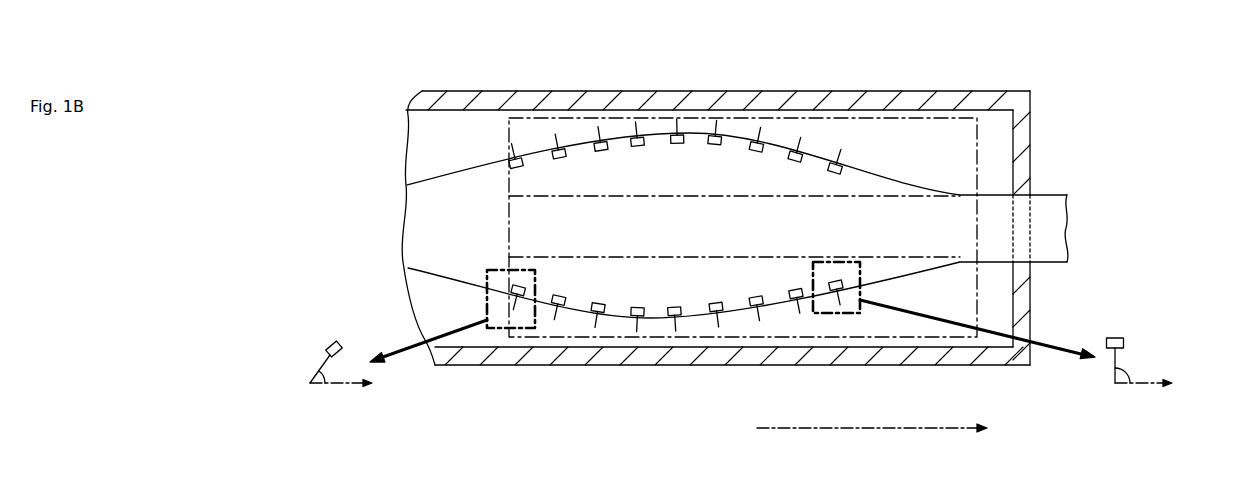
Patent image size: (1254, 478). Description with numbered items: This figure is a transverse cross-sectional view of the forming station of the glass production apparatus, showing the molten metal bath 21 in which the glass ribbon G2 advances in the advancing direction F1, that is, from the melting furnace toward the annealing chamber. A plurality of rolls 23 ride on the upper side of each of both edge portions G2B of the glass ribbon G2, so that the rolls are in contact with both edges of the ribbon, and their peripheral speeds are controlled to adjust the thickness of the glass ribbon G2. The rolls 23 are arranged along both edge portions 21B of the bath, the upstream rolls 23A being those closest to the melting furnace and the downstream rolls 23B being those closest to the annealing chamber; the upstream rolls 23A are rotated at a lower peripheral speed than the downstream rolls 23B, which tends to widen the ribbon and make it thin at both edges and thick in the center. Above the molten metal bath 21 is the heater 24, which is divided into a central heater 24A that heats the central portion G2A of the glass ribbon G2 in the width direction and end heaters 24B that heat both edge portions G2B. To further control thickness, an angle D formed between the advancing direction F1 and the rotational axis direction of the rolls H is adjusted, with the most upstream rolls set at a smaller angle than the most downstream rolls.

The molten metal bath 21 is at (365, 108).
The edge portion 21B is at (490, 117).
The roll 23 is at (676, 220).
The upstream roll 23A is at (555, 134).
The downstream roll 23B is at (841, 149).
The heater 24 is at (1124, 140).
The central heater 24A is at (958, 215).
The end heater 24B is at (965, 150).
The glass ribbon G2 is at (739, 153).
The central portion G2A is at (687, 196).
The edge portion G2B is at (687, 133).
The rotational axis direction of the rolls H is at (711, 361).
The angle D is at (732, 371).
The advancing direction F1 is at (741, 410).